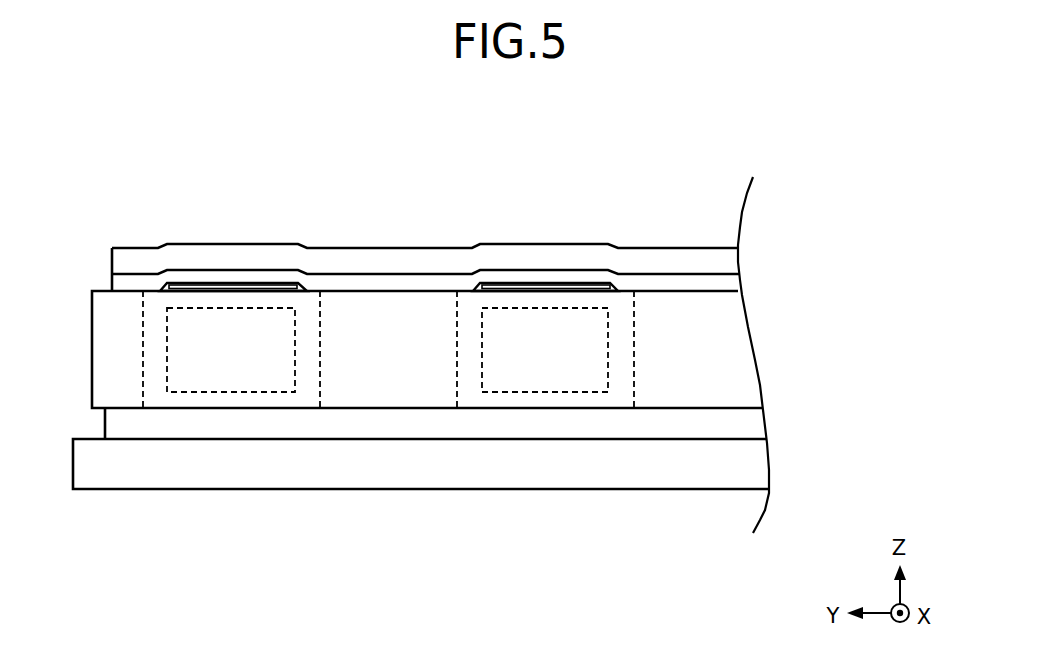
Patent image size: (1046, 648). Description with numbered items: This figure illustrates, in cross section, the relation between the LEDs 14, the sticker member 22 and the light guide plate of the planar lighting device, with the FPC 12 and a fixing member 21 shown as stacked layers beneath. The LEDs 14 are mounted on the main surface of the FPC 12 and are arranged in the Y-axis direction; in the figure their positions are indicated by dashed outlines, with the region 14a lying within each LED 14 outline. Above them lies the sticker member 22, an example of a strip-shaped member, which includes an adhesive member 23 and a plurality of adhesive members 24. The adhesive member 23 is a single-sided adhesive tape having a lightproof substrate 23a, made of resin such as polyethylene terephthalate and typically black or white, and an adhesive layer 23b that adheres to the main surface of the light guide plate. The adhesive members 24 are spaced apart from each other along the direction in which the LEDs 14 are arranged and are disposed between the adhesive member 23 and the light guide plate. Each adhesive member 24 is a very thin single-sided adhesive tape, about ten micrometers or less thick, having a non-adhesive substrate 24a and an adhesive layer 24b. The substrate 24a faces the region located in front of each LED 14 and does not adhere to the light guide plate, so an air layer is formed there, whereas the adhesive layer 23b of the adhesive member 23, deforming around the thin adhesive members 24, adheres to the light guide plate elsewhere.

The FPC 12 is at (509, 472).
The fixing member 21 is at (548, 423).
The sticker member 22 is at (218, 145).
The adhesive member 23 is at (332, 189).
The substrate 23a is at (366, 258).
The adhesive layer 23b is at (418, 287).
The adhesive members 24 is at (175, 189).
The substrate 24a is at (262, 290).
The adhesive layer 24b is at (210, 290).
The LEDs 14 is at (327, 372).
The pressure chamber opening 14a is at (294, 366).